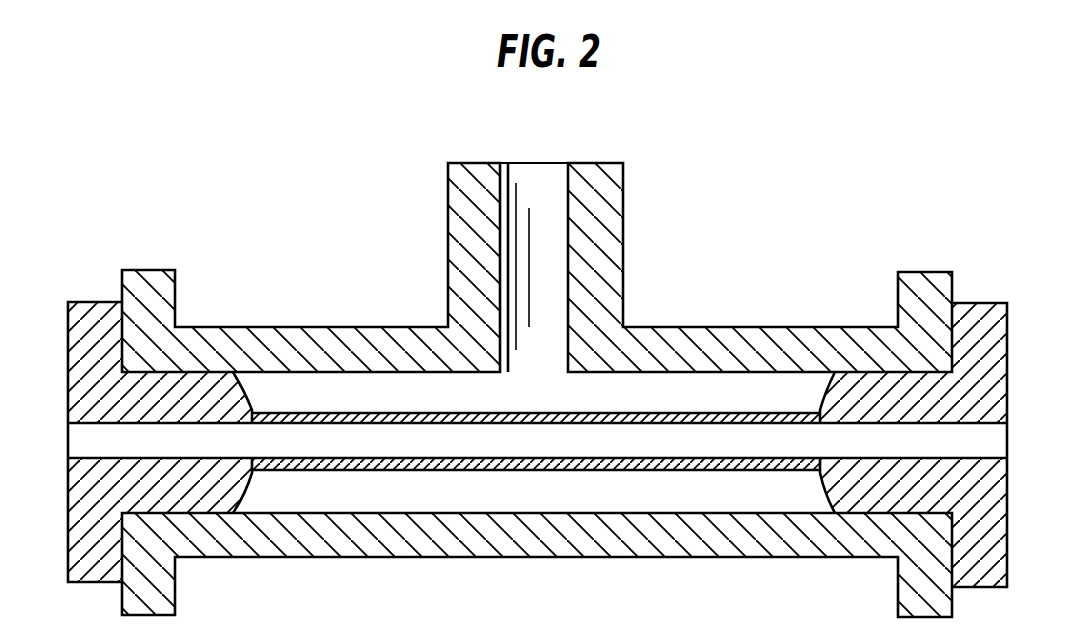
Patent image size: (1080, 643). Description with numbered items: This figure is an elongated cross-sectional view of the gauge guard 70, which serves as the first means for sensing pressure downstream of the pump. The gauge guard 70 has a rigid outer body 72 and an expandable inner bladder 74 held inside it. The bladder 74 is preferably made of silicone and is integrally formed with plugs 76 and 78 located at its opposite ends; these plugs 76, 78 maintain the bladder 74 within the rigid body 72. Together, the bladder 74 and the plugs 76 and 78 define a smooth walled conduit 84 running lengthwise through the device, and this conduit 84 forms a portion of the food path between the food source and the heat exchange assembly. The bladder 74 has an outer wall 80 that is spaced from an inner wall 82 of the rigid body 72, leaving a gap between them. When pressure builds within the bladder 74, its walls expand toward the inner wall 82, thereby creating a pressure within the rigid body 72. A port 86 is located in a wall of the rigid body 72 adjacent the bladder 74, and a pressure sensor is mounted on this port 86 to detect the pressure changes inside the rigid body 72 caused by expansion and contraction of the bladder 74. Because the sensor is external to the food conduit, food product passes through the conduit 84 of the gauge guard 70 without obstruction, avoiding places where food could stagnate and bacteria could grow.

The gauge guard 70 is at (704, 261).
The rigid outer body 72 is at (782, 327).
The expandable inner bladder 74 is at (645, 463).
The plug 76 is at (68, 525).
The plug 78 is at (1007, 527).
The outer wall 80 is at (478, 413).
The inner wall 82 is at (425, 375).
The smooth walled conduit 84 is at (527, 455).
The port 86 is at (625, 216).